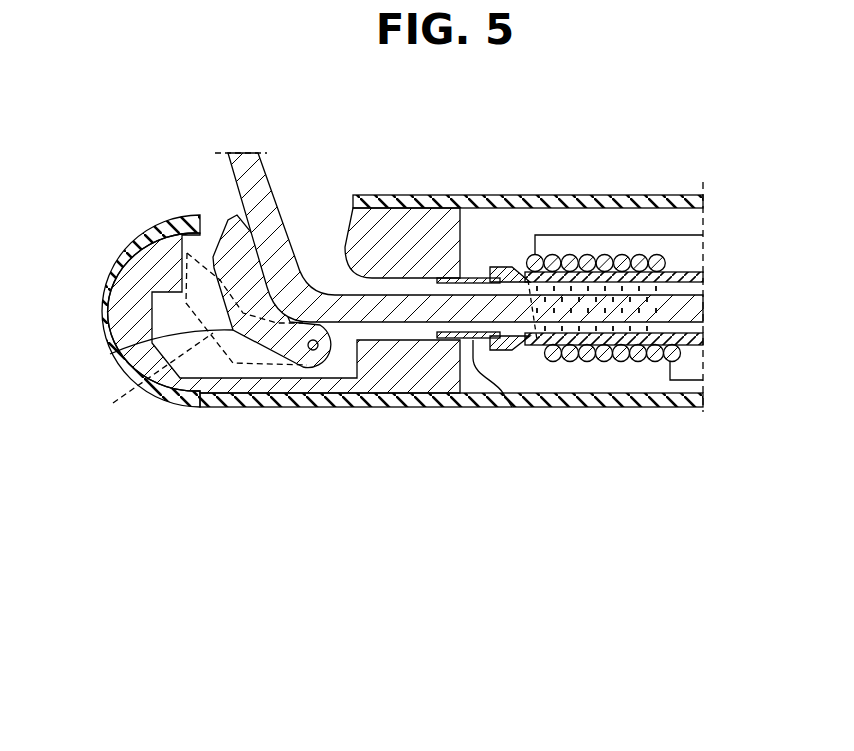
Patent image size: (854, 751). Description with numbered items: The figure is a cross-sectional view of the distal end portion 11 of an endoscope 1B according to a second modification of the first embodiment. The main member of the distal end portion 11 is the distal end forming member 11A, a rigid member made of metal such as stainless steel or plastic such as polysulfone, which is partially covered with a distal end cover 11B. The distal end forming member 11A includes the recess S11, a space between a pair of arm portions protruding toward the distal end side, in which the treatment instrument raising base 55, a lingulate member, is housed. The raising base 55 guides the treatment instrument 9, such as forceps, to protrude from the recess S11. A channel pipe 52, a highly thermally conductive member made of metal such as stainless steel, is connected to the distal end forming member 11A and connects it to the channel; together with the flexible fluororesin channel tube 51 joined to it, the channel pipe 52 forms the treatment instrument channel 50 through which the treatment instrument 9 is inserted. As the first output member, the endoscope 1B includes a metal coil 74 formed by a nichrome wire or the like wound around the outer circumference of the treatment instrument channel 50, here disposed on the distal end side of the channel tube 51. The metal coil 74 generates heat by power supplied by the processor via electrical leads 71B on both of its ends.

The endoscope 1B is at (74, 160).
The treatment instrument 9 is at (267, 178).
The recess S11 is at (308, 192).
The metal coil 74 is at (585, 254).
The electrical leads 71B is at (660, 233).
The treatment instrument raising base 55 is at (117, 352).
The distal end forming member 11A is at (206, 407).
The distal end cover 11B is at (451, 327).
The distal end portion 11 is at (402, 350).
The channel pipe 52 is at (512, 407).
The channel tube 51 is at (563, 362).
The treatment instrument channel 50 is at (570, 396).